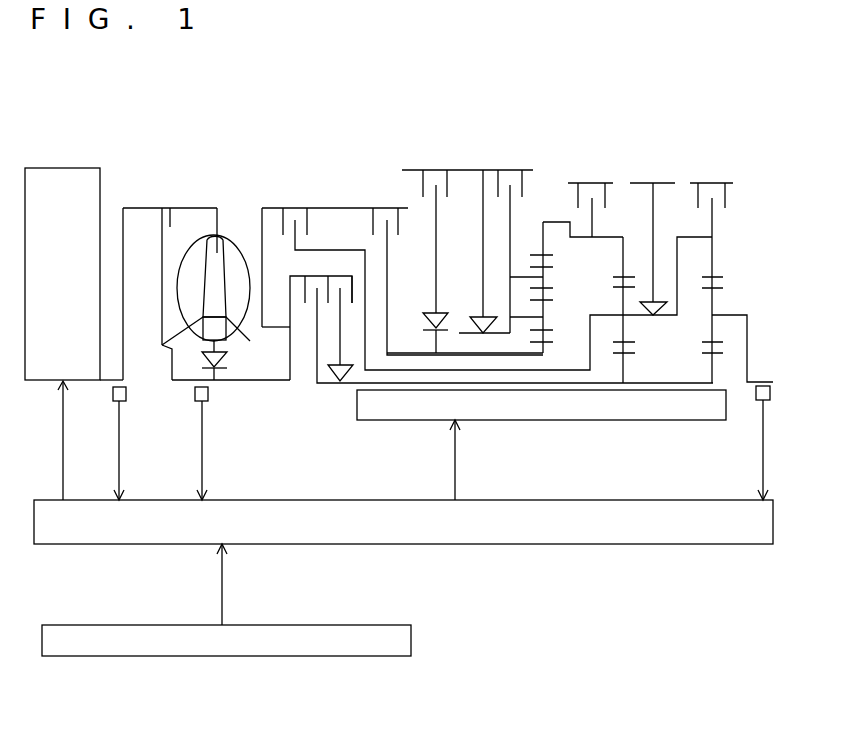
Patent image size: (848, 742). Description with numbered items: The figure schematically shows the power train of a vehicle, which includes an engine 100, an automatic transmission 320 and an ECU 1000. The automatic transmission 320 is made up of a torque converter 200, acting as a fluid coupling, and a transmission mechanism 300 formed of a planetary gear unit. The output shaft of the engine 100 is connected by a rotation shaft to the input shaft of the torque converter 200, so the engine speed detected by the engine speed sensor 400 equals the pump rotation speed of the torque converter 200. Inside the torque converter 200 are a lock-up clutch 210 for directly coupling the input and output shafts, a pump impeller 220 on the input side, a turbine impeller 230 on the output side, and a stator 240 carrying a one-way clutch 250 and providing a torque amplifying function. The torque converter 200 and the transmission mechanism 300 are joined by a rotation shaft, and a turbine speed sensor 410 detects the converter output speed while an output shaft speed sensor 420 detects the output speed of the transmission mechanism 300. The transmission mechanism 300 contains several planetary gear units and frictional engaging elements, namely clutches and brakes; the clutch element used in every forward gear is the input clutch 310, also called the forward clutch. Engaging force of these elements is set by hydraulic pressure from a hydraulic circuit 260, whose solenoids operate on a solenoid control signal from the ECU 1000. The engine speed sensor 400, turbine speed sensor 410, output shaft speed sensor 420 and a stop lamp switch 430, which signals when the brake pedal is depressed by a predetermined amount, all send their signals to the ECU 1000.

The engine 100 is at (78, 167).
The torque converter 200 is at (233, 230).
The lock-up clutch 210 is at (155, 225).
The pump impeller 220 is at (245, 337).
The turbine impeller 230 is at (193, 240).
The stator 240 is at (197, 340).
The one-way clutch 250 is at (225, 362).
The hydraulic circuit 260 is at (633, 420).
The transmission mechanism 300 is at (738, 122).
The input clutch 310 is at (337, 278).
The automatic transmission 320 is at (222, 122).
The engine speed sensor 400 is at (127, 397).
The turbine speed sensor 410 is at (208, 395).
The output shaft speed sensor 420 is at (753, 395).
The stop lamp switch 430 is at (377, 656).
The ECU 1000 is at (570, 544).